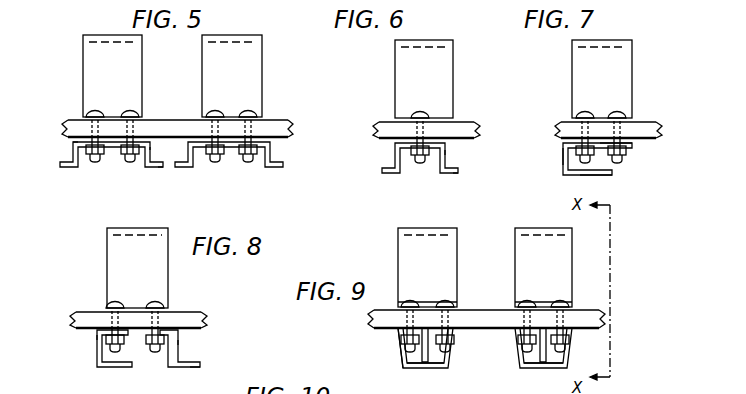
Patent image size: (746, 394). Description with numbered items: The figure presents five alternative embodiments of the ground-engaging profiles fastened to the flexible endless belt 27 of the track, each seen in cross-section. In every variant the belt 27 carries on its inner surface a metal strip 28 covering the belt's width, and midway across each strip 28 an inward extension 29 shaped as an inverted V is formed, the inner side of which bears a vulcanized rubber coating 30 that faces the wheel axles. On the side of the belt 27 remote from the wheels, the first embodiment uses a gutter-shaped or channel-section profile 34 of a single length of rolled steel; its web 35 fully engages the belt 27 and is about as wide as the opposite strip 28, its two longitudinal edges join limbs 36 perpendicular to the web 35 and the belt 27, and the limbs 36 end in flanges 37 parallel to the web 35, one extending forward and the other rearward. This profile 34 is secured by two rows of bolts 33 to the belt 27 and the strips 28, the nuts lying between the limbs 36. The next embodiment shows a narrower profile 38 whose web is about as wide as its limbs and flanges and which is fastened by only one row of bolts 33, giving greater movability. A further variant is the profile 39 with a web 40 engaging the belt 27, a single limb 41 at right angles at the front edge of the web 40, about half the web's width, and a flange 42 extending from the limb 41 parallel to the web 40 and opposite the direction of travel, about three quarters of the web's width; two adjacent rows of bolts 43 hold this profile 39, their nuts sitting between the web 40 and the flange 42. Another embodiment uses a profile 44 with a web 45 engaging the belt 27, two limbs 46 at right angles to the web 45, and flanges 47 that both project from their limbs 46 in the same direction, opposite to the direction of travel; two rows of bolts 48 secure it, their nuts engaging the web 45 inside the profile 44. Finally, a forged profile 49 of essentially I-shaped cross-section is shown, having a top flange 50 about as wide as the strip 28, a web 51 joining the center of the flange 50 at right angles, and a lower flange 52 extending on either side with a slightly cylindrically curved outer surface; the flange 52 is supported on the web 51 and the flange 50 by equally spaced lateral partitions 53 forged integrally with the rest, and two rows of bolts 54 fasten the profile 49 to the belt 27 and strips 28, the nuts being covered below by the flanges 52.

In FIG. 5, the endless belt 27 is at (277, 123).
In FIG. 6, the endless belt 27 is at (477, 127).
In FIG. 7, the endless belt 27 is at (608, 130).
In FIG. 8, the endless belt 27 is at (203, 315).
In FIG. 9, the endless belt 27 is at (597, 310).
In FIG. 5, the metal strip 28 is at (203, 110).
In FIG. 6, the metal strip 28 is at (458, 117).
In FIG. 7, the metal strip 28 is at (633, 115).
In FIG. 8, the metal strip 28 is at (168, 304).
In FIG. 9, the metal strip 28 is at (515, 307).
In FIG. 5, the inward extension 29 is at (210, 61).
In FIG. 6, the inward extension 29 is at (442, 65).
In FIG. 7, the inward extension 29 is at (623, 60).
In FIG. 8, the inward extension 29 is at (110, 253).
In FIG. 9, the inward extension 29 is at (514, 243).
In FIG. 5, the rubber coating 30 is at (212, 78).
In FIG. 6, the rubber coating 30 is at (403, 78).
In FIG. 7, the rubber coating 30 is at (573, 73).
In FIG. 8, the rubber coating 30 is at (115, 277).
In FIG. 9, the rubber coating 30 is at (522, 258).
In FIG. 5, the bolt 33 is at (117, 180).
In FIG. 6, the bolt 33 is at (427, 108).
In FIG. 5, the channel-section profile 34 is at (70, 174).
In FIG. 5, the web 35 is at (78, 142).
In FIG. 5, the limb 36 is at (148, 152).
In FIG. 6, the limb 36 is at (448, 155).
In FIG. 5, the flange 37 is at (158, 167).
In FIG. 6, the flange 37 is at (453, 173).
In FIG. 6, the profile 38 is at (397, 143).
In FIG. 7, the profile 39 is at (562, 170).
In FIG. 7, the web 40 is at (632, 145).
In FIG. 7, the limb 41 is at (563, 150).
In FIG. 7, the flange 42 is at (598, 174).
In FIG. 7, the bolt 43 is at (590, 157).
In FIG. 8, the profile 44 is at (96, 365).
In FIG. 8, the web 45 is at (170, 335).
In FIG. 8, the limb 46 is at (98, 342).
In FIG. 8, the flange 47 is at (192, 366).
In FIG. 8, the bolt 48 is at (157, 349).
In FIG. 9, the profile 49 is at (403, 367).
In FIG. 9, the top flange 50 is at (398, 335).
In FIG. 9, the web 51 is at (424, 365).
In FIG. 9, the flange 52 is at (447, 363).
In FIG. 9, the lateral partition 53 is at (453, 345).
In FIG. 9, the bolt 54 is at (442, 300).